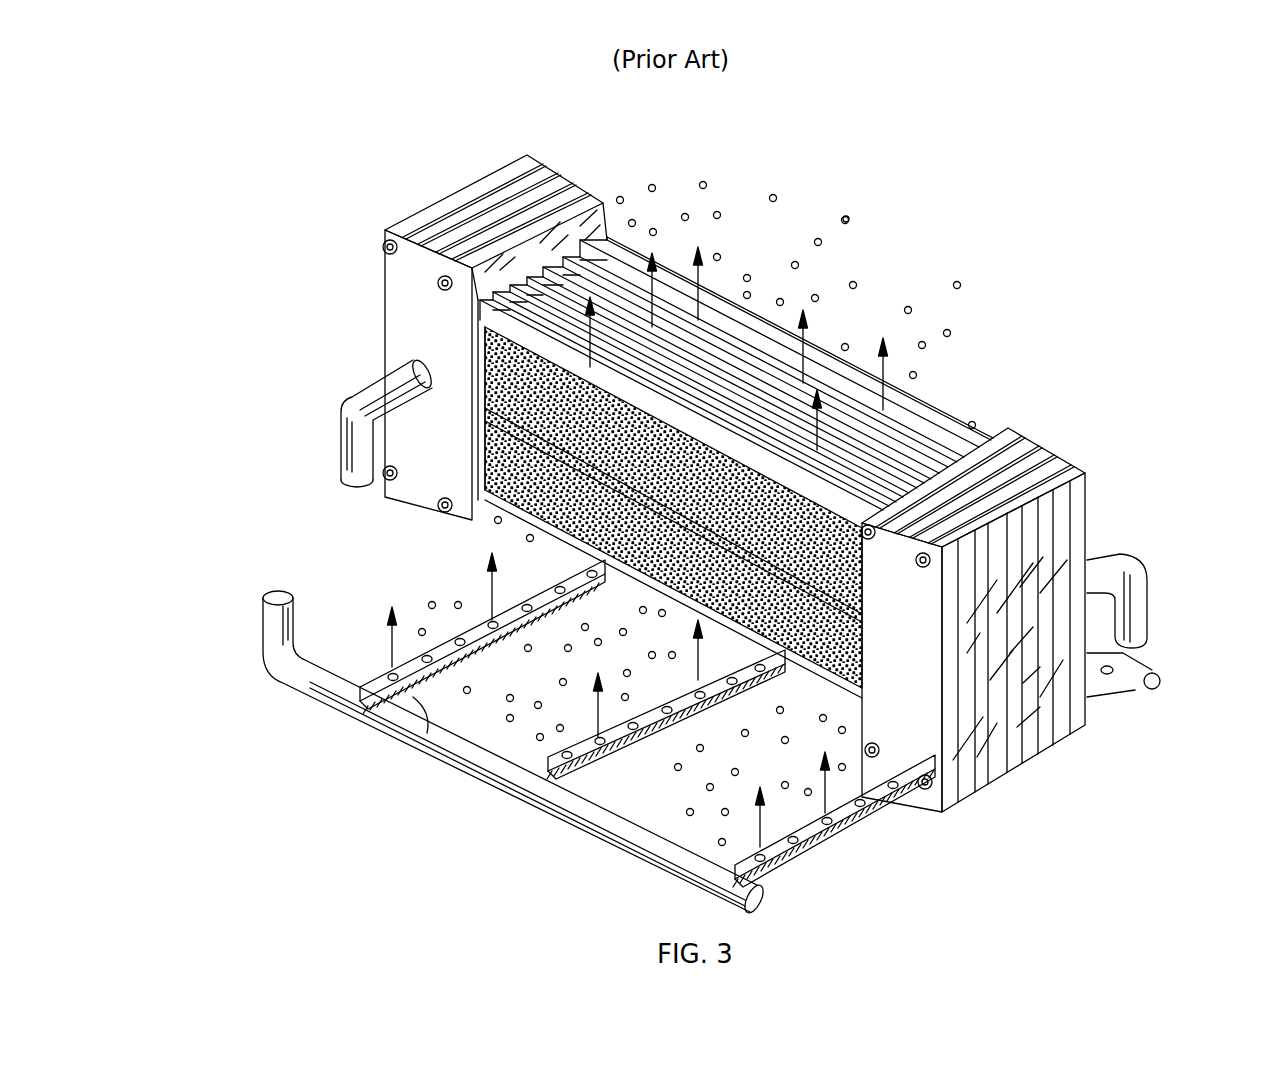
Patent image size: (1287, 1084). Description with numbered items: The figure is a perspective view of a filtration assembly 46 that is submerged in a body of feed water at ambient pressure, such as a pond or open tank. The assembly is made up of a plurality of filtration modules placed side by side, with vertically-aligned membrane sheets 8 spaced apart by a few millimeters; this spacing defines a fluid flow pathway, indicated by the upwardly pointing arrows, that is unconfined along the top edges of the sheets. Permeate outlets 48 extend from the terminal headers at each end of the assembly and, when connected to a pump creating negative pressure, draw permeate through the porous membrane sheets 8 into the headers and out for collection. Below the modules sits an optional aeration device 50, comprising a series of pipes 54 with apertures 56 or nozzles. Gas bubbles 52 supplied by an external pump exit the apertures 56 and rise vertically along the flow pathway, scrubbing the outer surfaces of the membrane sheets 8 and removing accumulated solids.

The membrane sheet 8 is at (527, 503).
The filtration assembly 46 is at (1050, 293).
The permeate outlet 48 is at (343, 450).
The aeration device 50 is at (263, 633).
The gas bubbles 52 is at (850, 218).
The pipe 54 is at (403, 742).
The aperture 56 is at (535, 758).